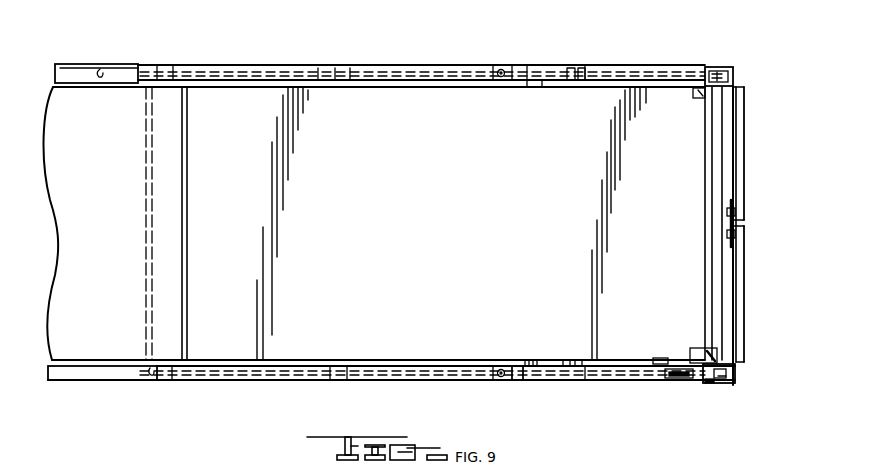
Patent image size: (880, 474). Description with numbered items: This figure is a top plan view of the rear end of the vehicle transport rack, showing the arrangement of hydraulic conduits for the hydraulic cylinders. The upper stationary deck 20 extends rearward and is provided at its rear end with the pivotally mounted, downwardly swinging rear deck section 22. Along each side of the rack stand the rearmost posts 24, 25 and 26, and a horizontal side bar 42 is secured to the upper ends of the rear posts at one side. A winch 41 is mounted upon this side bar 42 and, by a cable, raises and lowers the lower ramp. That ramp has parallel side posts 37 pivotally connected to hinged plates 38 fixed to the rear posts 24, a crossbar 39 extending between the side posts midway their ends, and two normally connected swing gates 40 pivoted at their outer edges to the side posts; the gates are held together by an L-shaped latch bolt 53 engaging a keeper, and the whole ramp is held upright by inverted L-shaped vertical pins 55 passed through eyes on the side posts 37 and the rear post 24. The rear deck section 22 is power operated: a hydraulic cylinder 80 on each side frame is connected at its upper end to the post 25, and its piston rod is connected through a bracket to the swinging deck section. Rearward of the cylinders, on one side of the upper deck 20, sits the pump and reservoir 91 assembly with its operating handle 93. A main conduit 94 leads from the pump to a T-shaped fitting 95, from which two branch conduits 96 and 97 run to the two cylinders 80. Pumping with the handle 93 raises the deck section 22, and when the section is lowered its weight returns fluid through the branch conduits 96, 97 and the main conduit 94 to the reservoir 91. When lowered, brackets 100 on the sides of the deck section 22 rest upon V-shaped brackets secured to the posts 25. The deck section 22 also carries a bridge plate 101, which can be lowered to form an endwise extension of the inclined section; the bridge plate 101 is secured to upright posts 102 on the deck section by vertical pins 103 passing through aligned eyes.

The upper stationary deck 20 is at (115, 223).
The rear deck section 22 is at (444, 223).
The rear post 24 is at (718, 66).
The post 25 is at (517, 381).
The post 26 is at (338, 381).
The side post 37 is at (737, 372).
The hinged plate 38 is at (712, 385).
The crossbar 39 is at (730, 272).
The swing gate 40 is at (738, 300).
The winch 41 is at (688, 381).
The horizontal side bar 42 is at (660, 72).
The latch bolt 53 is at (737, 206).
The vertical pin 55 is at (719, 384).
The hydraulic cylinder 80 is at (501, 68).
The reservoir 91 is at (94, 61).
The operating handle 93 is at (102, 68).
The main conduit 94 is at (150, 64).
The T-shaped fitting 95 is at (143, 88).
The branch conduit 96 is at (319, 70).
The branch conduit 97 is at (305, 372).
The bracket 100 is at (595, 58).
The bridge plate 101 is at (704, 292).
The upright post 102 is at (699, 96).
The vertical pin 103 is at (708, 349).